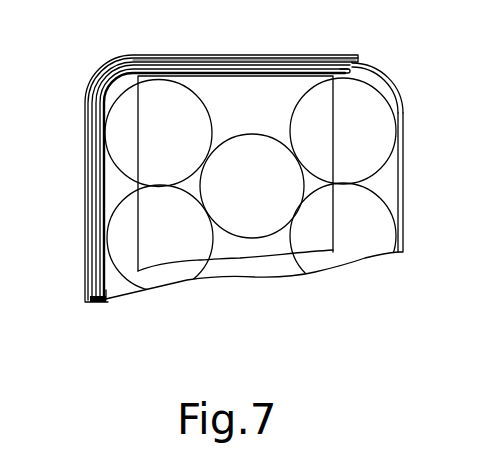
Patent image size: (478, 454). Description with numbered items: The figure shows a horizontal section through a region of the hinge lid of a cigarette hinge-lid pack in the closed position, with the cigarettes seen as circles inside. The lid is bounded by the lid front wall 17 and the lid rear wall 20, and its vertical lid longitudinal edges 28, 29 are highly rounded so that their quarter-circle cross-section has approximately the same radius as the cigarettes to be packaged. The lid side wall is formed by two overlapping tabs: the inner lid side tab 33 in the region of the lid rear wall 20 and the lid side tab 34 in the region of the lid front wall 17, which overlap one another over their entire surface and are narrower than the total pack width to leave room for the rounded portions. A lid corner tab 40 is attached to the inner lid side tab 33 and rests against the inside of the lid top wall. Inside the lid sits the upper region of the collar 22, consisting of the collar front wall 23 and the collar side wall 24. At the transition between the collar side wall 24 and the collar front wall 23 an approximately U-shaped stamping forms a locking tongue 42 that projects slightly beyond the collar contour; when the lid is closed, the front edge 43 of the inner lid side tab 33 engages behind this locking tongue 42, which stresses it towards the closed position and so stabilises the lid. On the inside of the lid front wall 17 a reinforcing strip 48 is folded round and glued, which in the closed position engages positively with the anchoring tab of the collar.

The lid front wall 17 is at (88, 184).
The lid rear wall 20 is at (400, 200).
The collar 22 is at (116, 289).
The collar front wall 23 is at (106, 303).
The collar side wall 24 is at (360, 74).
The lid longitudinal edge 28 is at (108, 90).
The lid longitudinal edge 29 is at (388, 75).
The lid side tab 33 is at (266, 63).
The lid side tab 34 is at (283, 60).
The lid corner tab 40 is at (231, 250).
The locking tongue 42 is at (127, 66).
The front edge 43 is at (142, 62).
The reinforcing strip 48 is at (92, 303).